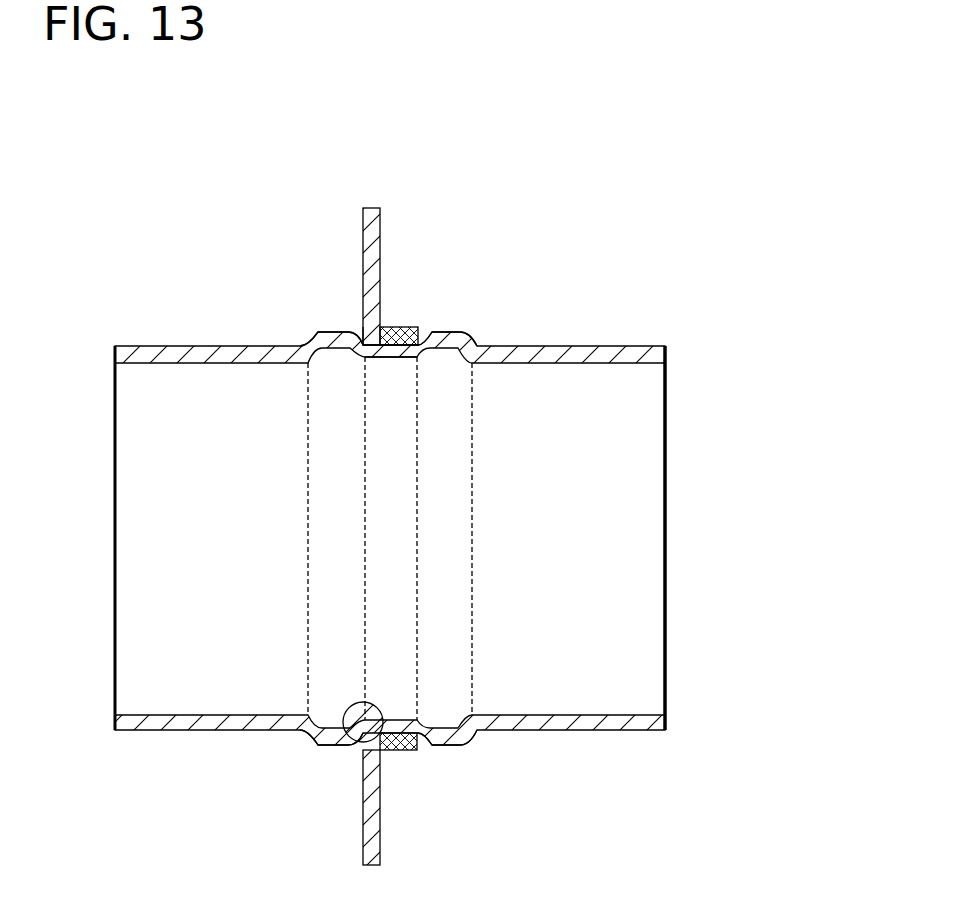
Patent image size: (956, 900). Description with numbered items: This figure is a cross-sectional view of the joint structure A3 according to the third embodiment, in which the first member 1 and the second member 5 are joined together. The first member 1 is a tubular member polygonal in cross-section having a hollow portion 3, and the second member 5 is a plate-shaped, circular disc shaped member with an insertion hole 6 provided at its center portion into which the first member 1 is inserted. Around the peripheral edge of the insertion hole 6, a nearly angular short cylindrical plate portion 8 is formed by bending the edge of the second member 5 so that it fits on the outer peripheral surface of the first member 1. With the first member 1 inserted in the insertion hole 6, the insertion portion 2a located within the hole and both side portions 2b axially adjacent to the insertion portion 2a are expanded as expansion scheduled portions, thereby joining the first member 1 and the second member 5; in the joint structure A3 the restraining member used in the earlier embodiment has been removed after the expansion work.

The first member 1 is at (652, 345).
The insertion portion 2a is at (398, 328).
The side portions 2b is at (340, 333).
The hollow portion 3 is at (620, 543).
The second member 5 is at (366, 207).
The insertion hole 6 is at (338, 742).
The plate portion 8 is at (404, 333).
The joint structure A3 is at (722, 285).